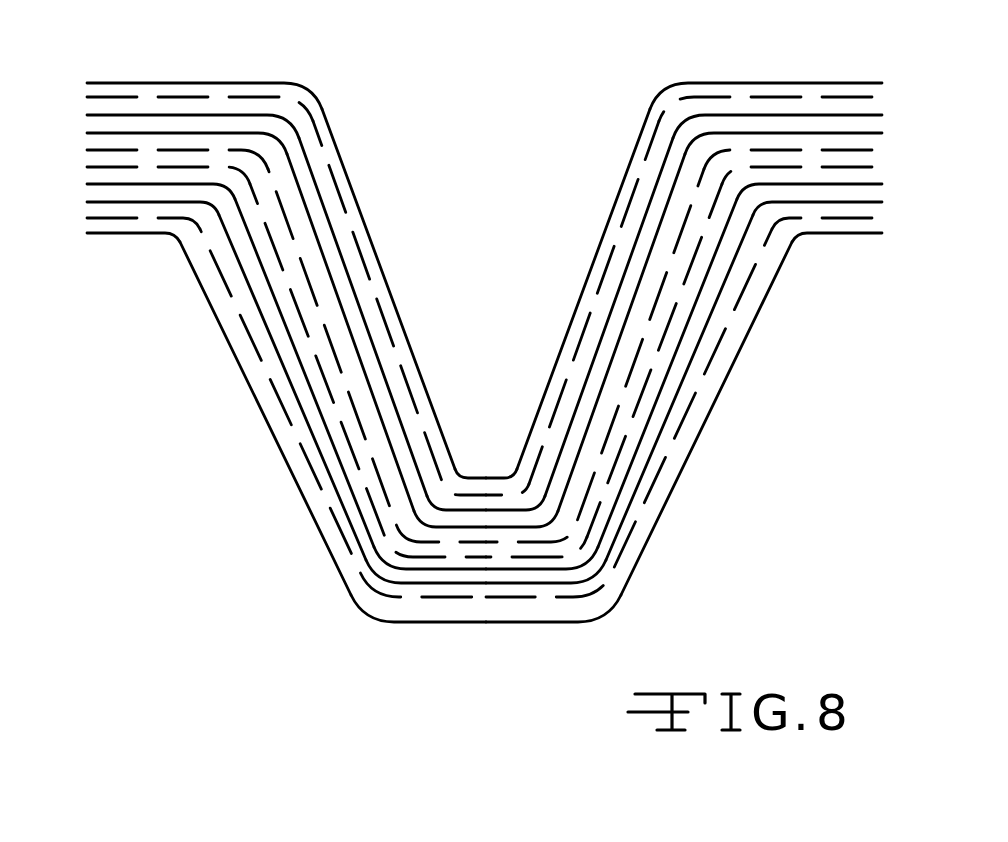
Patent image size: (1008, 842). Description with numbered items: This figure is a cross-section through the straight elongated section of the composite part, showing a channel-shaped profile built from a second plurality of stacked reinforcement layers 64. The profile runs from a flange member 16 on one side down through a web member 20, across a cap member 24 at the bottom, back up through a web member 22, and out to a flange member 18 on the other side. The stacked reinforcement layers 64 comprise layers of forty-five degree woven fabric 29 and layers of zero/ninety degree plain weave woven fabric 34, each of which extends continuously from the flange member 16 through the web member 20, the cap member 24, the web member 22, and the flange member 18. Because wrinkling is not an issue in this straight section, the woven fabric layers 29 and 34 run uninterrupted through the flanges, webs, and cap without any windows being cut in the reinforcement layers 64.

The flange member 16 is at (174, 168).
The flange member 18 is at (800, 157).
The web member 20 is at (302, 363).
The web member 22 is at (648, 448).
The cap member 24 is at (483, 558).
The layers of 0/90° plain weave woven fabric 34 is at (249, 350).
The layers of 45° woven fabric 29 is at (715, 339).
The second plurality of stacked reinforcement layers 64 is at (377, 505).